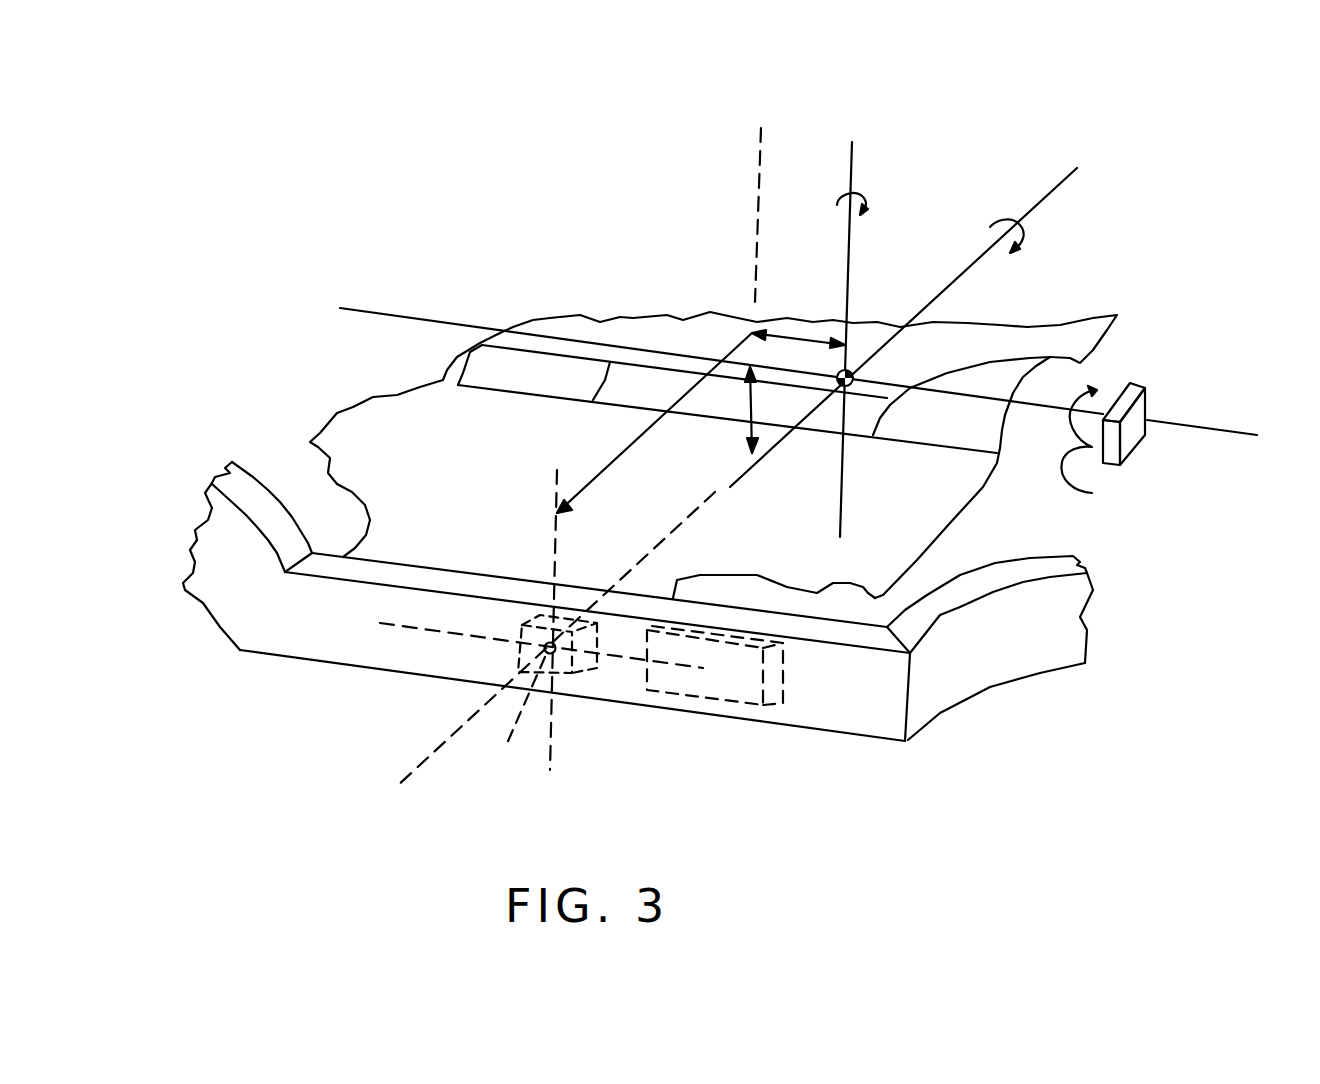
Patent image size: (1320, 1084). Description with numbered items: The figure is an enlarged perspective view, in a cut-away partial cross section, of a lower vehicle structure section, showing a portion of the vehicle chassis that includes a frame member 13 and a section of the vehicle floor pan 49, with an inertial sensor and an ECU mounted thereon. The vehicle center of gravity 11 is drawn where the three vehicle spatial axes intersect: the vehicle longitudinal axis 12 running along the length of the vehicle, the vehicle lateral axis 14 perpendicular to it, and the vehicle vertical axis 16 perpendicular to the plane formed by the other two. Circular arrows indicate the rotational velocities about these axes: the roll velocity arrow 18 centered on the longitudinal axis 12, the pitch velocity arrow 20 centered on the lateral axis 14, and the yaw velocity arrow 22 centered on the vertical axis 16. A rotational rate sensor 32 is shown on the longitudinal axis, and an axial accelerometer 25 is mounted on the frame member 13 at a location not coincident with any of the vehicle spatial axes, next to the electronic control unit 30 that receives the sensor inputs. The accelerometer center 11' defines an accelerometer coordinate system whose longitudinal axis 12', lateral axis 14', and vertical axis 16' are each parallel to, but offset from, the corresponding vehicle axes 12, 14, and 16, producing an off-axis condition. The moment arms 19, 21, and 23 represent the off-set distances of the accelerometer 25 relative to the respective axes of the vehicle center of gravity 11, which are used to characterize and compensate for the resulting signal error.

The vehicle center of gravity 11 is at (902, 358).
The vehicle longitudinal axis 12 is at (806, 371).
The frame member 13 is at (288, 633).
The vehicle lateral axis 14 is at (909, 306).
The vehicle vertical axis 16 is at (817, 311).
The roll velocity circular arrow 18 is at (1099, 450).
The moment arm 19 is at (603, 470).
The pitch velocity circular arrow 20 is at (1027, 232).
The moment arm 21 is at (780, 330).
The yaw velocity circular arrow 22 is at (837, 205).
The moment arm 23 is at (730, 430).
The axial accelerometer 25 is at (580, 676).
The electronic control unit 30 is at (745, 688).
The rotational rate sensor 32 is at (1140, 388).
The vehicle floor pan 49 is at (360, 418).
The axial accelerometer center 11' is at (505, 721).
The accelerometer longitudinal axis 12' is at (523, 676).
The accelerometer lateral axis 14' is at (578, 640).
The accelerometer vertical axis 16' is at (502, 612).